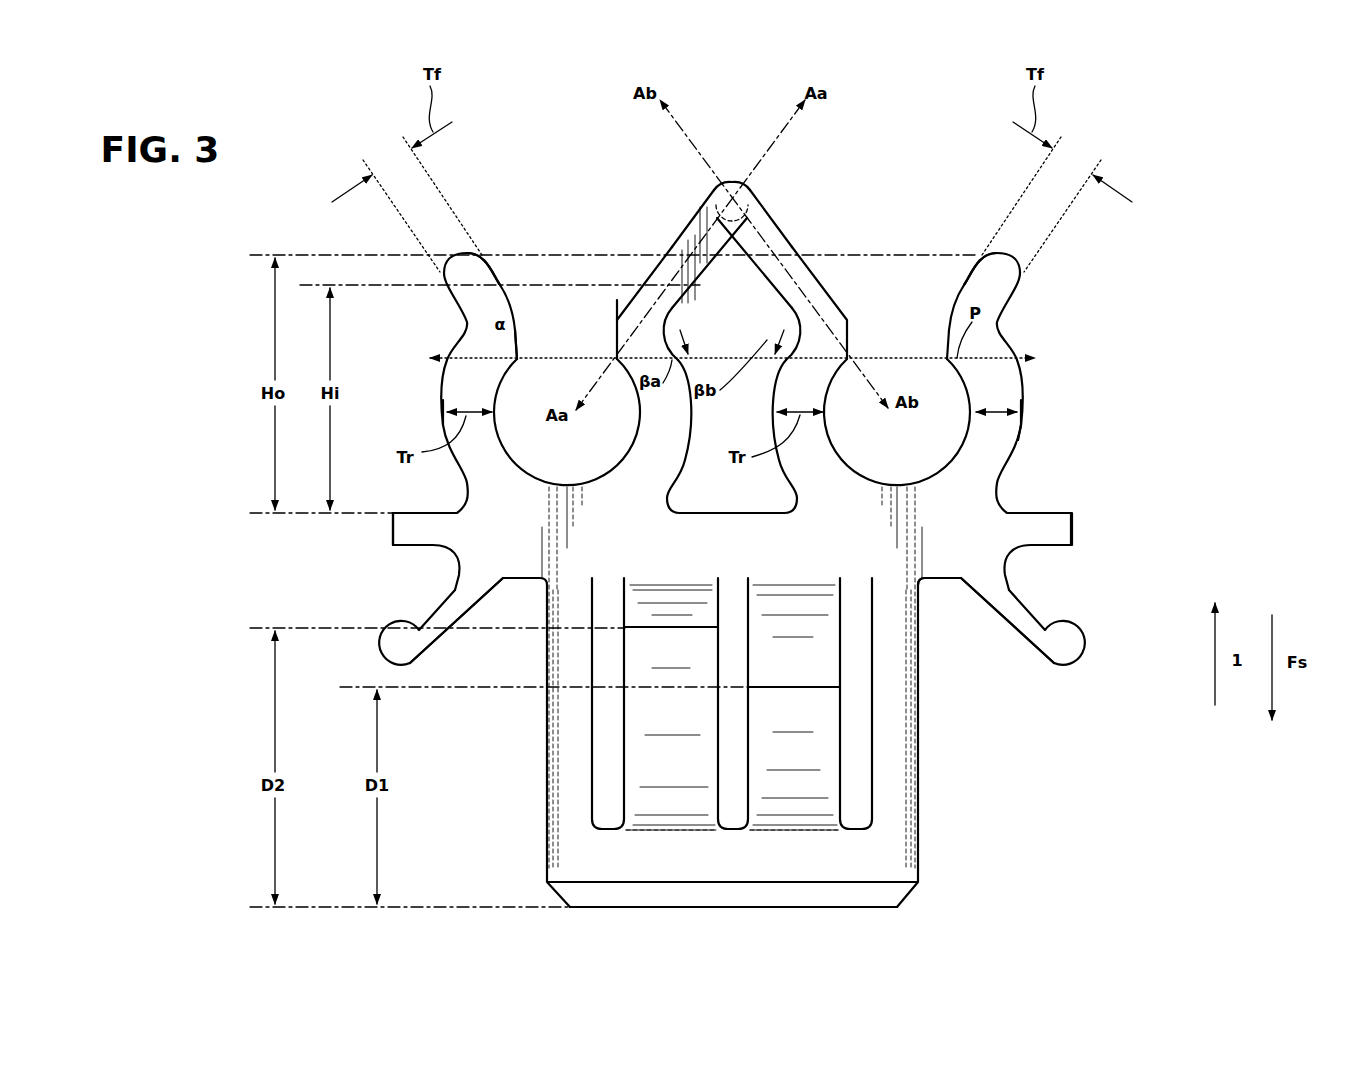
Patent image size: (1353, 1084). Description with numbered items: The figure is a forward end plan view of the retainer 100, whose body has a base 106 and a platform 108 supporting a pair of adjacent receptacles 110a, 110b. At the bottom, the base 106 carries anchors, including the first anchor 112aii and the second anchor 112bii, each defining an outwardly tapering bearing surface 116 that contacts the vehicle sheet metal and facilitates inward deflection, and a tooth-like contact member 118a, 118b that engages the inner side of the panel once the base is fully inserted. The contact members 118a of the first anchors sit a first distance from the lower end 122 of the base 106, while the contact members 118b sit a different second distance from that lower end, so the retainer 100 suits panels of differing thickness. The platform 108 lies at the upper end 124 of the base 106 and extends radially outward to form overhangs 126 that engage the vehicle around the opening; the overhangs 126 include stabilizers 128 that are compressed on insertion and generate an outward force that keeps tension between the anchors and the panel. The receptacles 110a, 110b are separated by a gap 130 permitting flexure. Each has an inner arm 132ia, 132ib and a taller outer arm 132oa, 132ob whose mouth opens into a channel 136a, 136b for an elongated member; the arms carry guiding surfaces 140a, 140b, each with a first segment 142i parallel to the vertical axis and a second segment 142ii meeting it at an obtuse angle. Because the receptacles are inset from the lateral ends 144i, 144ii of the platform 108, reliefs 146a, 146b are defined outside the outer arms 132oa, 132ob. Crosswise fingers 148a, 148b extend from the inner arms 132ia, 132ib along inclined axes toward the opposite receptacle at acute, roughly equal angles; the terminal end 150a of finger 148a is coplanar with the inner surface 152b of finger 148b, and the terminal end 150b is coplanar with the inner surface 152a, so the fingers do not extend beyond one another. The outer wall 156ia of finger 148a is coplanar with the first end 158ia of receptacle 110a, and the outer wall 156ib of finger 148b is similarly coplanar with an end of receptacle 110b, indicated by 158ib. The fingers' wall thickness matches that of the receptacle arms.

The retainer 100 is at (1178, 98).
The base 106 is at (932, 860).
The platform 108 is at (1105, 540).
The receptacle 110a is at (1028, 318).
The receptacle 110b is at (428, 330).
The first anchor 112aii is at (807, 833).
The second anchor 112bii is at (682, 833).
The bearing surface 116 is at (662, 757).
The contact member 118a is at (800, 690).
The contact member 118b is at (670, 628).
The lower end 122 is at (602, 908).
The upper end 124 is at (917, 588).
The overhang 126 is at (510, 610).
The stabilizer 128 is at (438, 600).
The gap 130 is at (740, 402).
The inner arm 132ia is at (630, 420).
The inner arm 132ib is at (835, 420).
The outer arm 132oa is at (437, 415).
The outer arm 132ob is at (1030, 413).
The channel 136a is at (950, 387).
The channel 136b is at (510, 398).
The guiding surface 140a is at (527, 293).
The guiding surface 140b is at (863, 323).
The first segment 142i is at (613, 337).
The second segment 142ii is at (505, 355).
The lateral end 144i is at (1073, 523).
The lateral end 144ii is at (393, 520).
The relief 146a is at (1010, 497).
The relief 146b is at (453, 495).
The finger 148a is at (788, 227).
The finger 148b is at (677, 227).
The terminal end 150a is at (714, 185).
The terminal end 150b is at (752, 190).
The inner surface 152a is at (797, 247).
The inner surface 152b is at (663, 243).
The outer wall 156ia is at (782, 287).
The outer wall 156ib is at (714, 272).
The first end 158ia is at (1000, 432).
The second inner wall 158ib is at (655, 453).